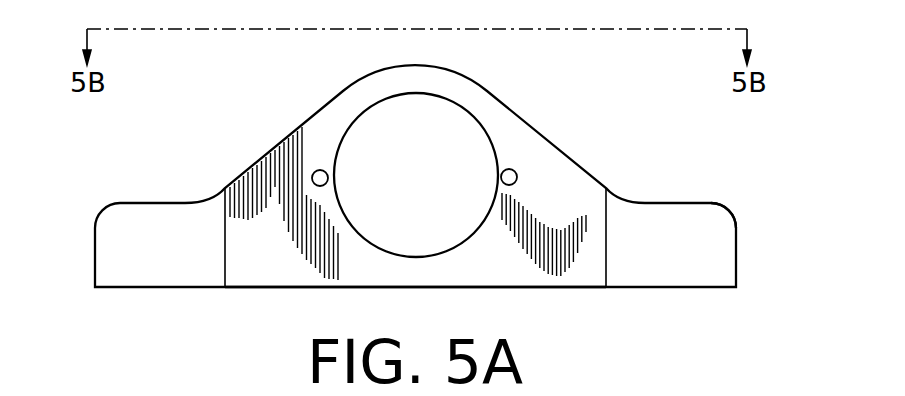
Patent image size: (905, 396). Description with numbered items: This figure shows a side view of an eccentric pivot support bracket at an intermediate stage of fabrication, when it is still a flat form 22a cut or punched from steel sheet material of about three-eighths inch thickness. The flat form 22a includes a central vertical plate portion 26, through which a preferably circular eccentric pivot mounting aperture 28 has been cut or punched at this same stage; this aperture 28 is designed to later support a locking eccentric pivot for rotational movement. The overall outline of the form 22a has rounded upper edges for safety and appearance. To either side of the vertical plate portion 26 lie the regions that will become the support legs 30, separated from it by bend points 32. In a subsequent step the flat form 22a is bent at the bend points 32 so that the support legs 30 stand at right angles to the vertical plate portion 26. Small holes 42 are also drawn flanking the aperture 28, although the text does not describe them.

The form of the eccentric pivot support bracket 22a is at (518, 113).
The eccentric pivot mounting aperture 28 is at (355, 121).
The mounting holes 42 is at (518, 178).
The bend points 32 is at (225, 268).
The support legs 30 is at (732, 211).
The vertical plate portion 26 is at (270, 268).